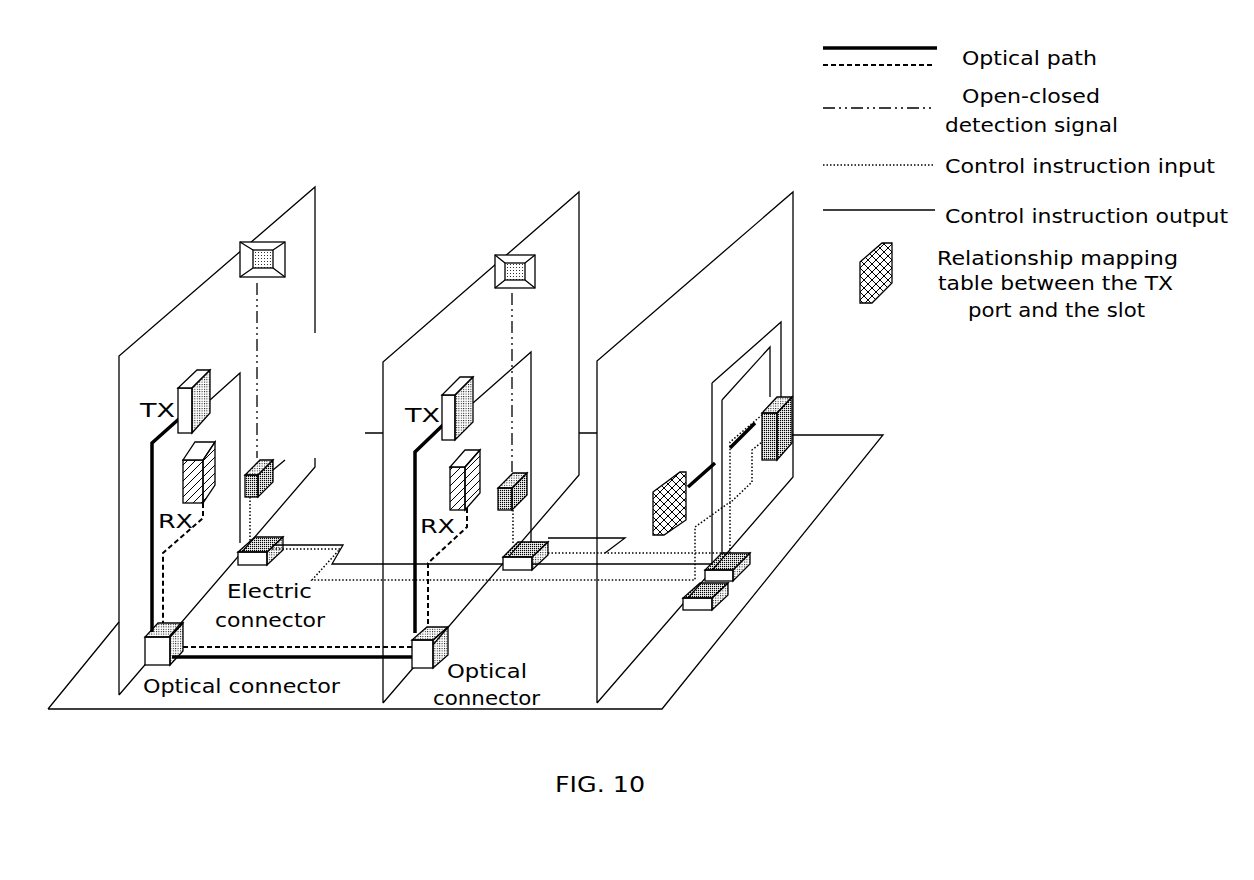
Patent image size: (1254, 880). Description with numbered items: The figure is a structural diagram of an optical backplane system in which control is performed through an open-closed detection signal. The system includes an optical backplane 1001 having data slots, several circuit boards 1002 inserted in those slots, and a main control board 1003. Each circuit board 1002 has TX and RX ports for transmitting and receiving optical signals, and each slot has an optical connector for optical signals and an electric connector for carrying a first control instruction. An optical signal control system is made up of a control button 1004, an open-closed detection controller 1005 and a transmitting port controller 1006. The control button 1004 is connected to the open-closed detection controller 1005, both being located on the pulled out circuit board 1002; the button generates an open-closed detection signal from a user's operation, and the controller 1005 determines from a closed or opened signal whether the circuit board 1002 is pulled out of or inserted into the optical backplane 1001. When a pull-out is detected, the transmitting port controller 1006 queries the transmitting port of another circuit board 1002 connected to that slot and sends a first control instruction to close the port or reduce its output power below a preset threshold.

The optical backplane 1001 is at (625, 712).
The circuit board 1002 is at (575, 197).
The main control board 1003 is at (777, 202).
The control button 1004 is at (495, 270).
The open-closed detection controller 1005 is at (305, 417).
The transmitting port controller 1006 is at (792, 415).